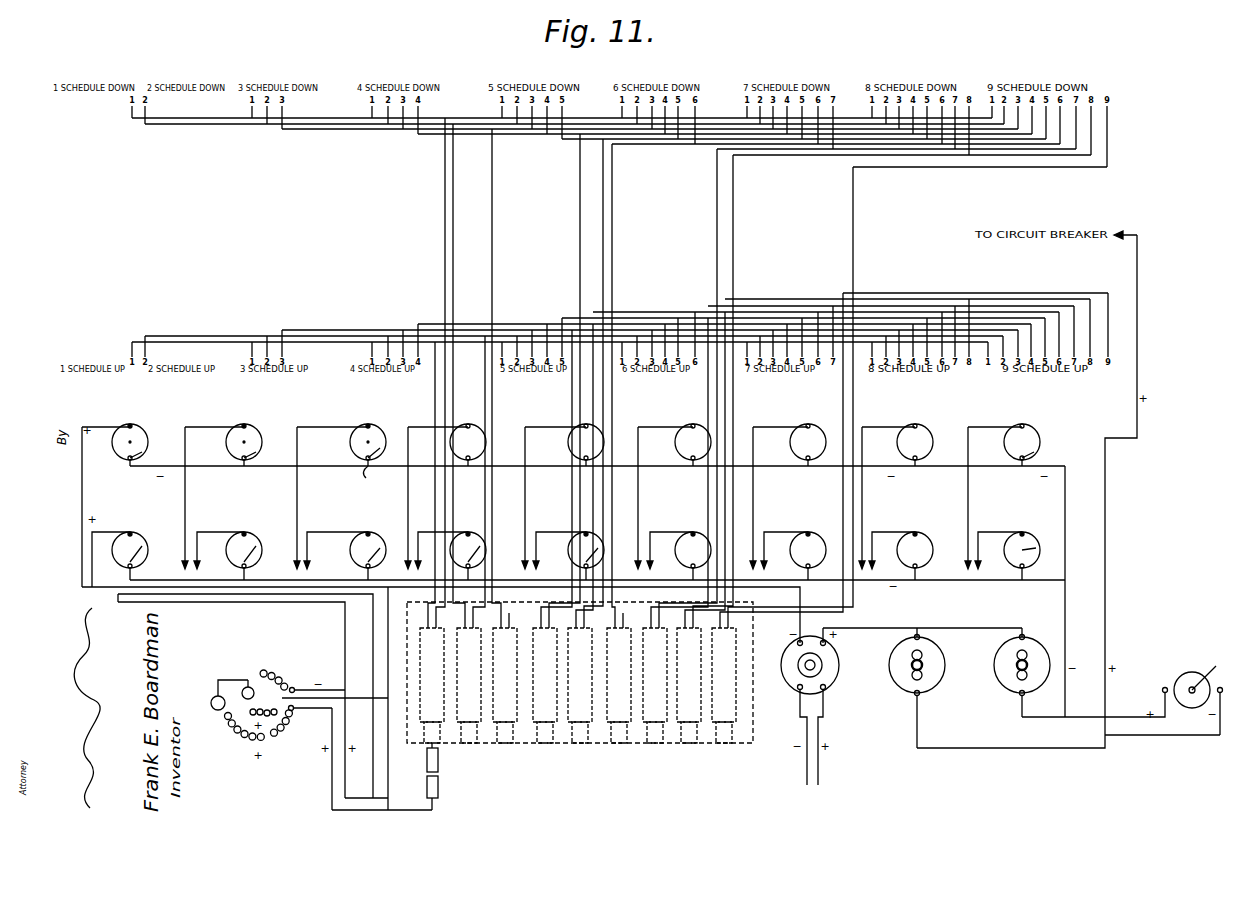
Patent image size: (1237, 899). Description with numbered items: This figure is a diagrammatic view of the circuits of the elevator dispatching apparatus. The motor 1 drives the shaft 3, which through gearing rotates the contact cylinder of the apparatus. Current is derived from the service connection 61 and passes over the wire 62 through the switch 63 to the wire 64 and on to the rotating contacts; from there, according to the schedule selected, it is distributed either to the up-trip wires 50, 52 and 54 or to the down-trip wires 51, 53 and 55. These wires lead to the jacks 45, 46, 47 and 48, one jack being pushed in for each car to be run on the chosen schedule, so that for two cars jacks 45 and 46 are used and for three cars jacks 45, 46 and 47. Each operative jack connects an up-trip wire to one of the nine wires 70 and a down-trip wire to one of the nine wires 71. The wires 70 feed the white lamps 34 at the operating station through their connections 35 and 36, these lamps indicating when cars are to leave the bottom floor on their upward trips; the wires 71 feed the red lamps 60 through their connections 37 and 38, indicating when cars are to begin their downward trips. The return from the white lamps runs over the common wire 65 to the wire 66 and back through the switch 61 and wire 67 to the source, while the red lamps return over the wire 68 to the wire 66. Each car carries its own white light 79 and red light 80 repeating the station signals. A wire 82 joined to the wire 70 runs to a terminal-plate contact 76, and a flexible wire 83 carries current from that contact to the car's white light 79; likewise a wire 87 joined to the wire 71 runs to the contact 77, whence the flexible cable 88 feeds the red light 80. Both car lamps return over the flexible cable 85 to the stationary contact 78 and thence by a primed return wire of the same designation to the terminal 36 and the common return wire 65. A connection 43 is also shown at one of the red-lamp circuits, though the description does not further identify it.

The motor 1 is at (1210, 672).
The shaft of the motor 3 is at (1164, 688).
The white lamps 34 is at (142, 546).
The white lamp connection 35 is at (132, 530).
The white lamp connection 36 is at (136, 566).
The red lamp connection 37 is at (132, 425).
The red lamp connection 38 is at (146, 454).
The relay connection 43 is at (364, 483).
The jack 45 is at (455, 776).
The jack 46 is at (469, 678).
The jack 47 is at (505, 678).
The jack 48 is at (545, 678).
The wire 50 is at (438, 392).
The wire 51 is at (442, 210).
The wire 52 is at (446, 406).
The wire 53 is at (454, 400).
The wire 54 is at (490, 416).
The wire 55 is at (494, 394).
The red lamps 60 is at (140, 428).
The service connection 61 is at (830, 660).
The wire 62 is at (916, 628).
The switch 63 is at (938, 648).
The wire 64 is at (1138, 314).
The wire 65 is at (276, 594).
The wire 66 is at (796, 600).
The wire 67 is at (804, 730).
The wire 68 is at (244, 470).
The wires 70 is at (92, 540).
The wires 71 is at (84, 478).
The terminal plate contact 76 is at (294, 711).
The terminal plate contact 77 is at (263, 699).
The stationary contact 78 is at (293, 687).
The white light 79 is at (212, 698).
The red light 80 is at (248, 686).
The wire 82 is at (332, 776).
The flexible wire 83 is at (240, 740).
The flexible cable 85 is at (184, 600).
The wire 87 is at (332, 804).
The flexible cable 88 is at (278, 736).